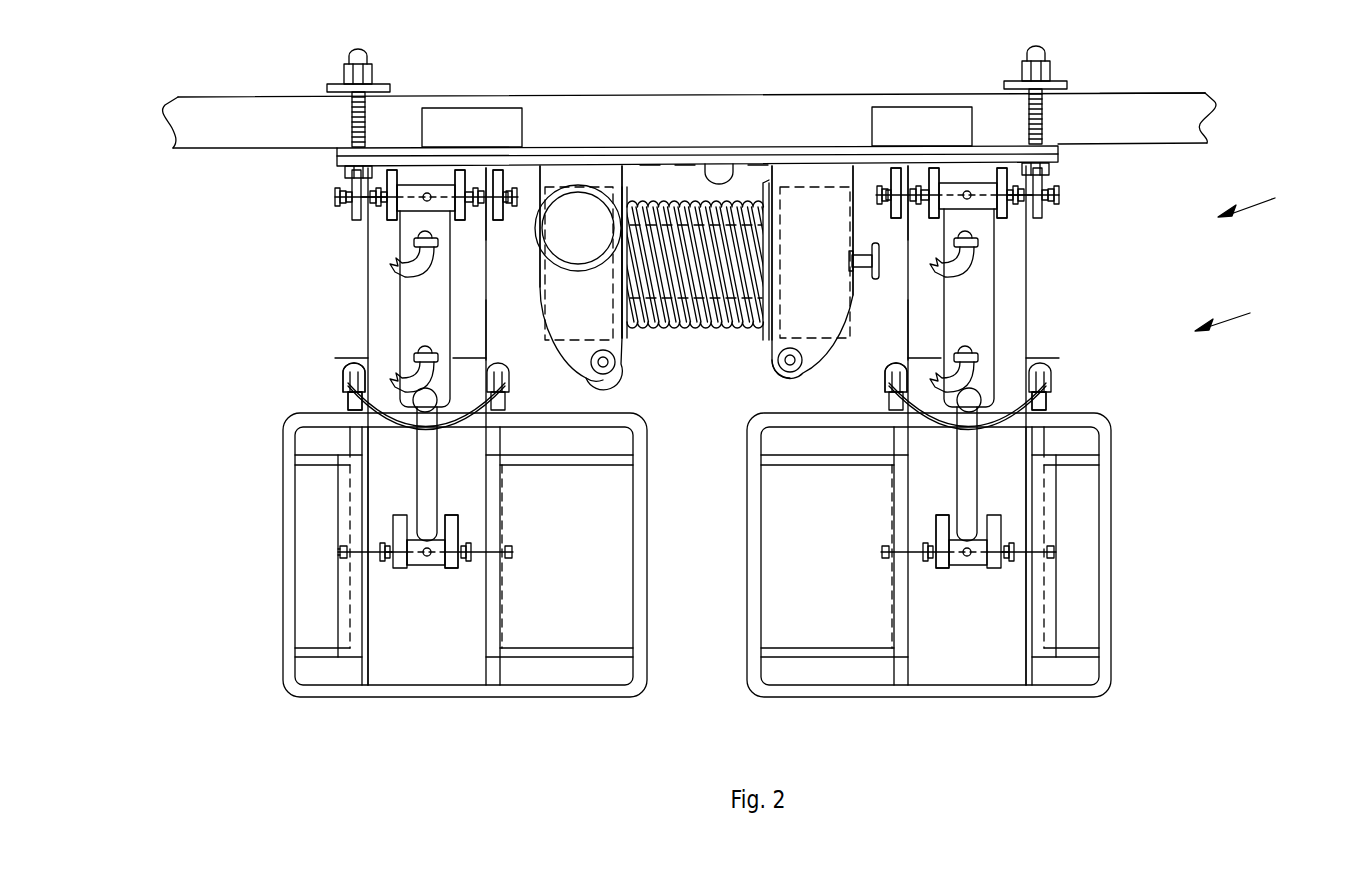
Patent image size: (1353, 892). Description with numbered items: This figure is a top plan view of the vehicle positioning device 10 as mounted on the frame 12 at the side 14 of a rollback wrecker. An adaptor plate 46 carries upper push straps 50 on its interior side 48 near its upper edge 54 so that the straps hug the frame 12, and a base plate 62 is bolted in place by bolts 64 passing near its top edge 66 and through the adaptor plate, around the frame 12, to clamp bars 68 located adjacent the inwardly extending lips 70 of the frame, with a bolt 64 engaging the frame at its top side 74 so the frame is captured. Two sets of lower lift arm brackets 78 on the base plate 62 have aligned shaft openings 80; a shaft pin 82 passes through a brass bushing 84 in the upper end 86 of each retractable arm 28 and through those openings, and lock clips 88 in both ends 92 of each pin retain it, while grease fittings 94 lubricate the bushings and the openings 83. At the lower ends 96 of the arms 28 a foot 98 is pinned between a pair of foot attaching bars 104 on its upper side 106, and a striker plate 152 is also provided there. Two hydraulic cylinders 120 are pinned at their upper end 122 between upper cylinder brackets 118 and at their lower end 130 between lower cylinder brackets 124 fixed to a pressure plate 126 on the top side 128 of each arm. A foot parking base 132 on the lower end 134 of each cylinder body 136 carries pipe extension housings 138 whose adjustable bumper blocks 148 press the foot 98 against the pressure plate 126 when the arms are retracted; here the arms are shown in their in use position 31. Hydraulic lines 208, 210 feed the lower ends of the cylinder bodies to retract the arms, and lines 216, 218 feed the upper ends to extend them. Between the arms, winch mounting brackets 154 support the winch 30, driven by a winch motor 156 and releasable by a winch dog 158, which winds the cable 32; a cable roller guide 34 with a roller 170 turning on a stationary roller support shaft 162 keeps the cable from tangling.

The vehicle positioning device 10 is at (1277, 194).
The frame 12 is at (1128, 93).
The side 14 is at (235, 142).
The retractable arms 28 is at (481, 345).
The winch 30 is at (832, 184).
The in use position 31 is at (1251, 313).
The cable 32 is at (620, 378).
The cable roller guide 34 is at (790, 379).
The adaptor plate 46 is at (757, 148).
The interior side 48 is at (648, 147).
The upper push straps 50 is at (916, 37).
The upper edge 54 is at (618, 148).
The base plate 62 is at (720, 176).
The bolts 64 is at (296, 72).
The top edge 66 is at (683, 158).
The clamp bars 68 is at (1062, 81).
The inwardly extending lips 70 is at (553, 147).
The top side 74 is at (1166, 105).
The lower lift arm brackets 78 is at (1108, 230).
The shaft openings 80 is at (1136, 518).
The shaft pin 82 is at (1151, 212).
The openings 83 is at (392, 125).
The brass bushing 84 is at (874, 112).
The upper end 86 is at (1111, 264).
The lock clips 88 is at (222, 513).
The ends 92 is at (241, 201).
The grease fittings 94 is at (405, 640).
The lower ends 96 is at (1171, 505).
The foot 98 is at (800, 698).
The foot attaching bars 104 is at (1139, 675).
The upper side 106 is at (512, 742).
The upper cylinder brackets 118 is at (302, 132).
The hydraulic cylinders 120 is at (452, 318).
The upper end 122 is at (964, 84).
The lower cylinder brackets 124 is at (232, 599).
The pressure plate 126 is at (256, 446).
The top side 128 is at (205, 333).
The lower end 130 is at (425, 658).
The foot parking base 132 is at (220, 376).
The lower end 134 is at (440, 387).
The body 136 is at (1130, 314).
The pipe extension housings 138 is at (1170, 404).
The bumper block 148 is at (1147, 437).
The striker plate 152 is at (1171, 652).
The winch mounting brackets 154 is at (832, 368).
The winch motor 156 is at (600, 216).
The winch dog 158 is at (860, 258).
The roller support shaft 162 is at (614, 357).
The roller 170 is at (800, 345).
The line 208 is at (895, 377).
The line 210 is at (343, 375).
The line 216 is at (962, 268).
The line 218 is at (390, 270).